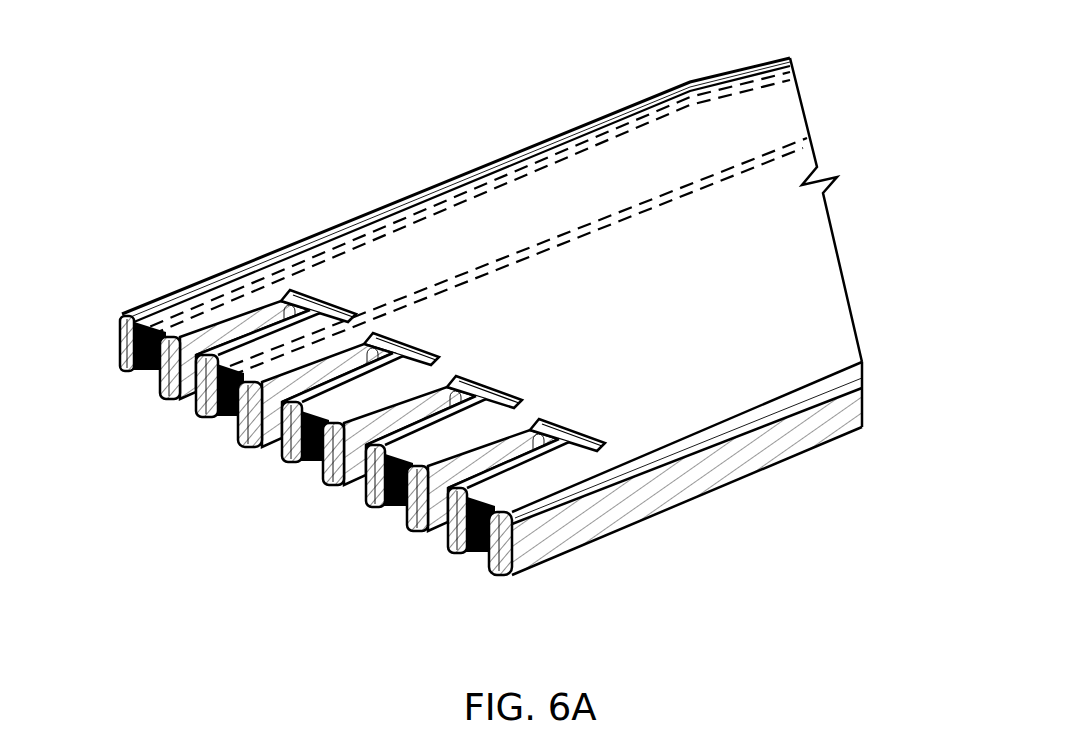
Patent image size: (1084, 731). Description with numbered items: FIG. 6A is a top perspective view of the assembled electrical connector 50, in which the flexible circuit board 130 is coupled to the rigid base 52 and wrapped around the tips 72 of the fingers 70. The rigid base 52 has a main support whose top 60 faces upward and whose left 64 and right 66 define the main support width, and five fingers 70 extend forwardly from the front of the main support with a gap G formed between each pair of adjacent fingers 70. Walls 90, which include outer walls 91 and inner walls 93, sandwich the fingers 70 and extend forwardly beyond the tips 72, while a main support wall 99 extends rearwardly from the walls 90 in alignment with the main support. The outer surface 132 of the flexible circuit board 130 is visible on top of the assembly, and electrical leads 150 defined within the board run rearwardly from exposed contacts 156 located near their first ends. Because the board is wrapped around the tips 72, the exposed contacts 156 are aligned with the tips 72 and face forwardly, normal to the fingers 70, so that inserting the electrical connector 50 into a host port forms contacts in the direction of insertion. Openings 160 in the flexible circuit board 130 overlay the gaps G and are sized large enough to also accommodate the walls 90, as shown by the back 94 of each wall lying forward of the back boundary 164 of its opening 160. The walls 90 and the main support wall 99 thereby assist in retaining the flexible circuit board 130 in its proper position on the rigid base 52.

The electrical connector 50 is at (492, 188).
The rigid base 52 is at (138, 308).
The top 60 is at (414, 188).
The left 64 is at (769, 482).
The right 66 is at (612, 106).
The fingers 70 is at (146, 416).
The tip 72 is at (231, 425).
The gap G is at (268, 458).
The walls 90 is at (444, 565).
The outer walls 91 is at (491, 582).
The inner walls 93 is at (398, 485).
The back 94 is at (522, 400).
The main support wall 99 is at (864, 376).
The flexible circuit board 130 is at (771, 105).
The outer surface 132 is at (726, 311).
The electrical leads 150 is at (813, 143).
The exposed contacts 156 is at (142, 372).
The openings 160 is at (477, 375).
The back boundary 164 is at (505, 392).